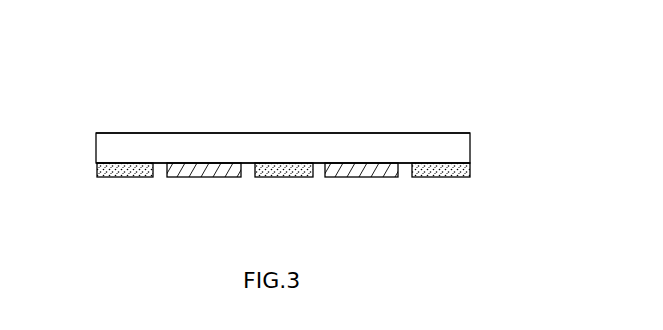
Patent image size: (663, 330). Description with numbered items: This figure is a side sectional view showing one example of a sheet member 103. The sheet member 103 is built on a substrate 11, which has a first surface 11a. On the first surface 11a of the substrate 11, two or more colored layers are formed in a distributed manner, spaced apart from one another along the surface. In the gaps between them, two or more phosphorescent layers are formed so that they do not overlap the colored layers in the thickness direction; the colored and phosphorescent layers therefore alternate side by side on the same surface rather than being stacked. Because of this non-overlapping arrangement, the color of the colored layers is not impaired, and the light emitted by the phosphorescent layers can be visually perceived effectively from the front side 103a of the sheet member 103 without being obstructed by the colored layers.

The sheet member 103 is at (157, 115).
The front side 103a is at (390, 133).
The substrate 11 is at (455, 147).
The first surface 11a is at (457, 163).